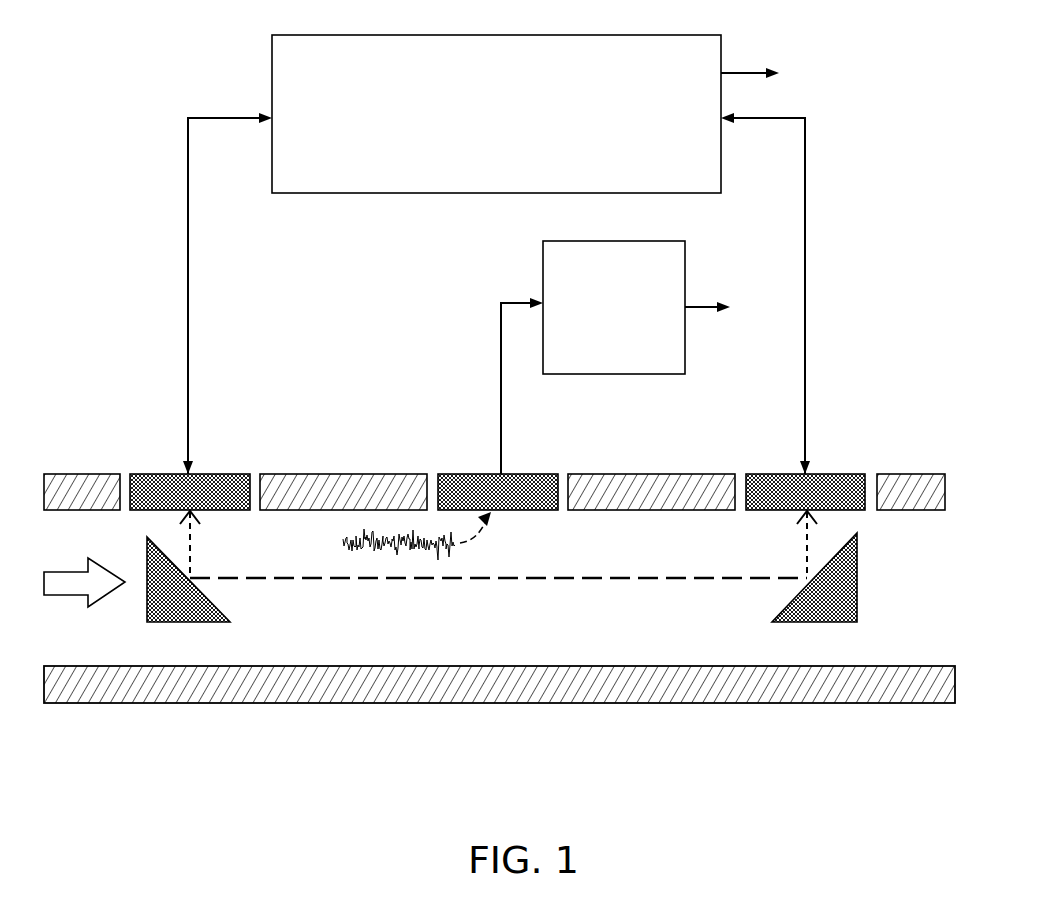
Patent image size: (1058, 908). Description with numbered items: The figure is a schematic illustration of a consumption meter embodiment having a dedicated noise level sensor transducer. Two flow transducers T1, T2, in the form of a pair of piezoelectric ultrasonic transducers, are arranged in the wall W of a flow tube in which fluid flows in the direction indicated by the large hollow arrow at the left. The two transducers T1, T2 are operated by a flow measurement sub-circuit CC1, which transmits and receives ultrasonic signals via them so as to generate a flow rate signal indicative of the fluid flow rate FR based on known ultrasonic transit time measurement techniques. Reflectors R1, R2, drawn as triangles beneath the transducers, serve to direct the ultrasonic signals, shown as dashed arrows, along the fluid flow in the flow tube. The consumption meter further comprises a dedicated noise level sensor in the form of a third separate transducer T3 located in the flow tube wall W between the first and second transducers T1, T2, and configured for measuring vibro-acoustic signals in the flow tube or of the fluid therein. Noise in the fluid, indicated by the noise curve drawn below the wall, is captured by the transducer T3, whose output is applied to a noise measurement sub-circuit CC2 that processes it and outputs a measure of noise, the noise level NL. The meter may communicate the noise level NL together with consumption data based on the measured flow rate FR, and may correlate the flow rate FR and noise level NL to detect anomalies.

The flow measurement sub-circuit CC1 is at (272, 78).
The noise measurement sub-circuit CC2 is at (543, 275).
The flow rate FR is at (769, 73).
The noise level NL is at (729, 307).
The first flow transducer T1 is at (190, 492).
The second flow transducer T2 is at (805, 492).
The noise level sensor transducer T3 is at (498, 492).
The first reflector R1 is at (188, 579).
The second reflector R2 is at (814, 577).
The flow tube wall W is at (499, 589).